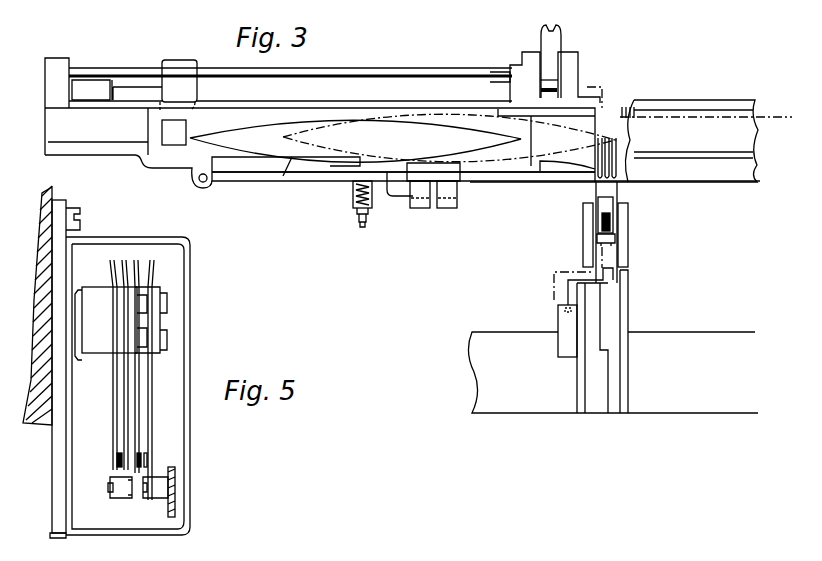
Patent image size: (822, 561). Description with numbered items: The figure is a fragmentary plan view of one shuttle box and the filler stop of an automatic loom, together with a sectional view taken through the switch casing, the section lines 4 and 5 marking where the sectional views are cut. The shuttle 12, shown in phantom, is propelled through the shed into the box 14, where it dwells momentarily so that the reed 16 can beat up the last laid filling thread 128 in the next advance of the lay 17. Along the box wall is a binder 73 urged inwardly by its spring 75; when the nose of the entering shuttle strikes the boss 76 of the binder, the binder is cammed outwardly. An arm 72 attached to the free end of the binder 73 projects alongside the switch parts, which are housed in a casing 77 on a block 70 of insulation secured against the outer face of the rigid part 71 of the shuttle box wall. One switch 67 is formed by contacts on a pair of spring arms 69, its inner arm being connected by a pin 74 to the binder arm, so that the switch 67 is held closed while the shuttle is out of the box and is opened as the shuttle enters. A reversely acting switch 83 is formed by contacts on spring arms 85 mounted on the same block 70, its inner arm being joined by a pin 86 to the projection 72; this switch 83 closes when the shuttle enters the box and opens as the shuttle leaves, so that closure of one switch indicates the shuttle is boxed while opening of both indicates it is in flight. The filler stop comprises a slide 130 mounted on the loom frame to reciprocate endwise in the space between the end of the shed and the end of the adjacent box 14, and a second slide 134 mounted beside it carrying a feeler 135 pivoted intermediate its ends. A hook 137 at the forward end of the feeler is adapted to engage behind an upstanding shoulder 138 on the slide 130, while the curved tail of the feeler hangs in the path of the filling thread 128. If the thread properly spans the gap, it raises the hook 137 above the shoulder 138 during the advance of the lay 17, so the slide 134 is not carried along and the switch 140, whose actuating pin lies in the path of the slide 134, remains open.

In FIG. 3, the section line 4— 4 is at (530, 18).
In FIG. 3, the section line 5— 5 is at (443, 165).
In FIG. 3, the shuttle 12 is at (322, 163).
In FIG. 3, the shuttle box 14 is at (451, 92).
In FIG. 3, the reed 16 is at (627, 105).
In FIG. 3, the lay 17 is at (738, 184).
In FIG. 3, the switch 67 is at (449, 208).
In FIG. 5, the switch 67 is at (144, 457).
In FIG. 5, the spring arms 69 is at (137, 412).
In FIG. 5, the block of insulation 70 is at (95, 294).
In FIG. 3, the rigid part of the shuttle box wall 71 is at (507, 181).
In FIG. 5, the rigid part of the shuttle box wall 71 is at (42, 417).
In FIG. 3, the arm 72 is at (395, 197).
In FIG. 5, the arm 72 is at (176, 501).
In FIG. 3, the binder 73 is at (287, 176).
In FIG. 5, the pin 74 is at (165, 500).
In FIG. 3, the spring 75 is at (354, 193).
In FIG. 3, the boss 76 is at (344, 163).
In FIG. 5, the casing 77 is at (190, 315).
In FIG. 3, the switch 83 is at (416, 208).
In FIG. 5, the switch 83 is at (118, 456).
In FIG. 5, the spring arms 85 is at (118, 400).
In FIG. 5, the pin 86 is at (121, 498).
In FIG. 3, the filling thread 128 is at (778, 118).
In FIG. 3, the slide 130 is at (605, 298).
In FIG. 3, the second slide 134 is at (620, 273).
In FIG. 3, the feeler 135 is at (618, 194).
In FIG. 3, the hook 137 is at (613, 241).
In FIG. 3, the shoulder 138 is at (609, 226).
In FIG. 3, the switch 140 is at (565, 342).